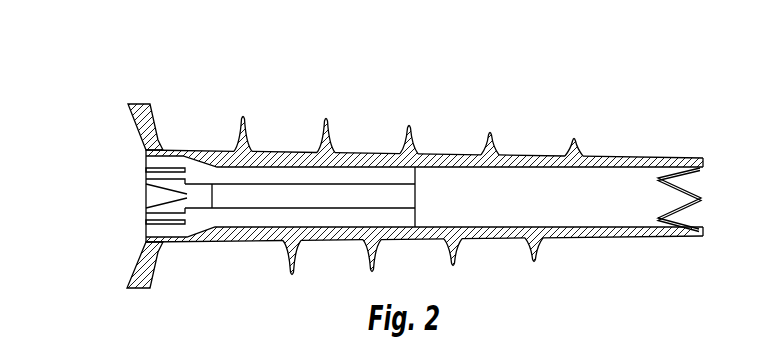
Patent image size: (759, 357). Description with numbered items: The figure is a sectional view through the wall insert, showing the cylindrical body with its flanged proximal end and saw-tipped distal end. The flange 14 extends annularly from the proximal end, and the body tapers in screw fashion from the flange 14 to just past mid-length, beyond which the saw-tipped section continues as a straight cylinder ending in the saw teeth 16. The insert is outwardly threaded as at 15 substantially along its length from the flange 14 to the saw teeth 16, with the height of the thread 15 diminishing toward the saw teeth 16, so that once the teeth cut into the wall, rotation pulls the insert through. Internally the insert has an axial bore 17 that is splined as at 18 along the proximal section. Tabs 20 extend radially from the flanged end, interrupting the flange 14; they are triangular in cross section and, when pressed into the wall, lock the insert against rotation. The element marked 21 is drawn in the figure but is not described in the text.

The connector hub 14 is at (166, 119).
The barbs 15 is at (412, 142).
The tubing (broken away) 16 is at (695, 160).
The lumen / passage 17 is at (327, 206).
The inner bore wall 18 is at (350, 178).
The flange wings 20 is at (134, 109).
The luer fitting 21 is at (162, 138).